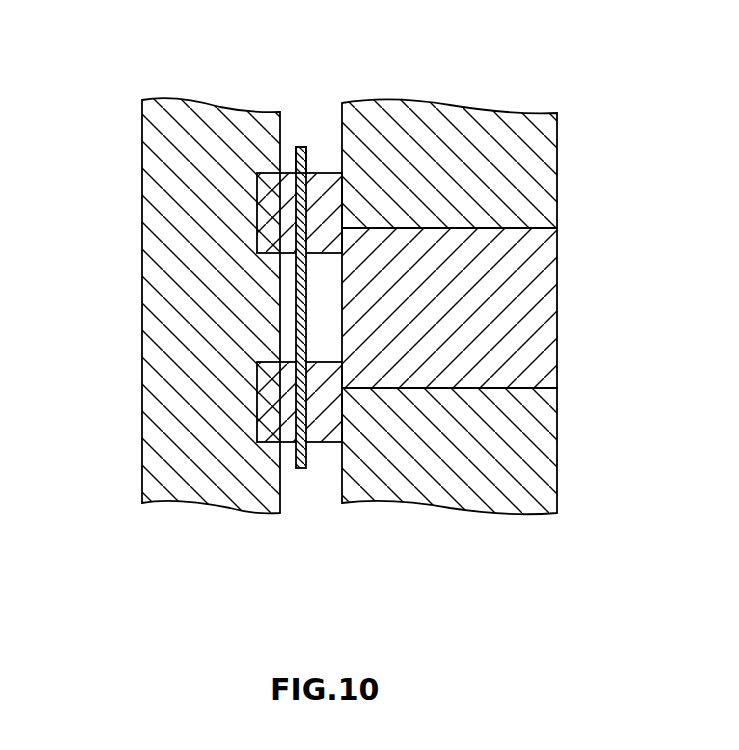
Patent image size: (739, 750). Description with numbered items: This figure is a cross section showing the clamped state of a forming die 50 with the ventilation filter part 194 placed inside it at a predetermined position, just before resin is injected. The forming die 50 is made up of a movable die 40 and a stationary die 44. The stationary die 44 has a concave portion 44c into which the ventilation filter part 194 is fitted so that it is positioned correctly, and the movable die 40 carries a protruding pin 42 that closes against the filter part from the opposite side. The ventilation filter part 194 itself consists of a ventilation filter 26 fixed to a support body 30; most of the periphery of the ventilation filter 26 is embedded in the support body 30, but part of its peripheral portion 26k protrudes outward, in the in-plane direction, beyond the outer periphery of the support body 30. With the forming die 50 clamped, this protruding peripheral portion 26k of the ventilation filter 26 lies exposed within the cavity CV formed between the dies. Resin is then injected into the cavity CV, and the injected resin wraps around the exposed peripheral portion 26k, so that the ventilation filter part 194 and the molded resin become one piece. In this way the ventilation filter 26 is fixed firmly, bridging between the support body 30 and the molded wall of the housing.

The forming die 50 is at (317, 259).
The stationary die 44 is at (155, 271).
The concave portion 44c is at (272, 178).
The movable die 40 is at (540, 184).
The protruding pin 42 is at (540, 331).
The ventilation filter part 194 is at (177, 291).
The ventilation filter 26 is at (295, 330).
The peripheral portion 26k is at (297, 159).
The support body 30 is at (290, 390).
The cavity CV is at (321, 127).